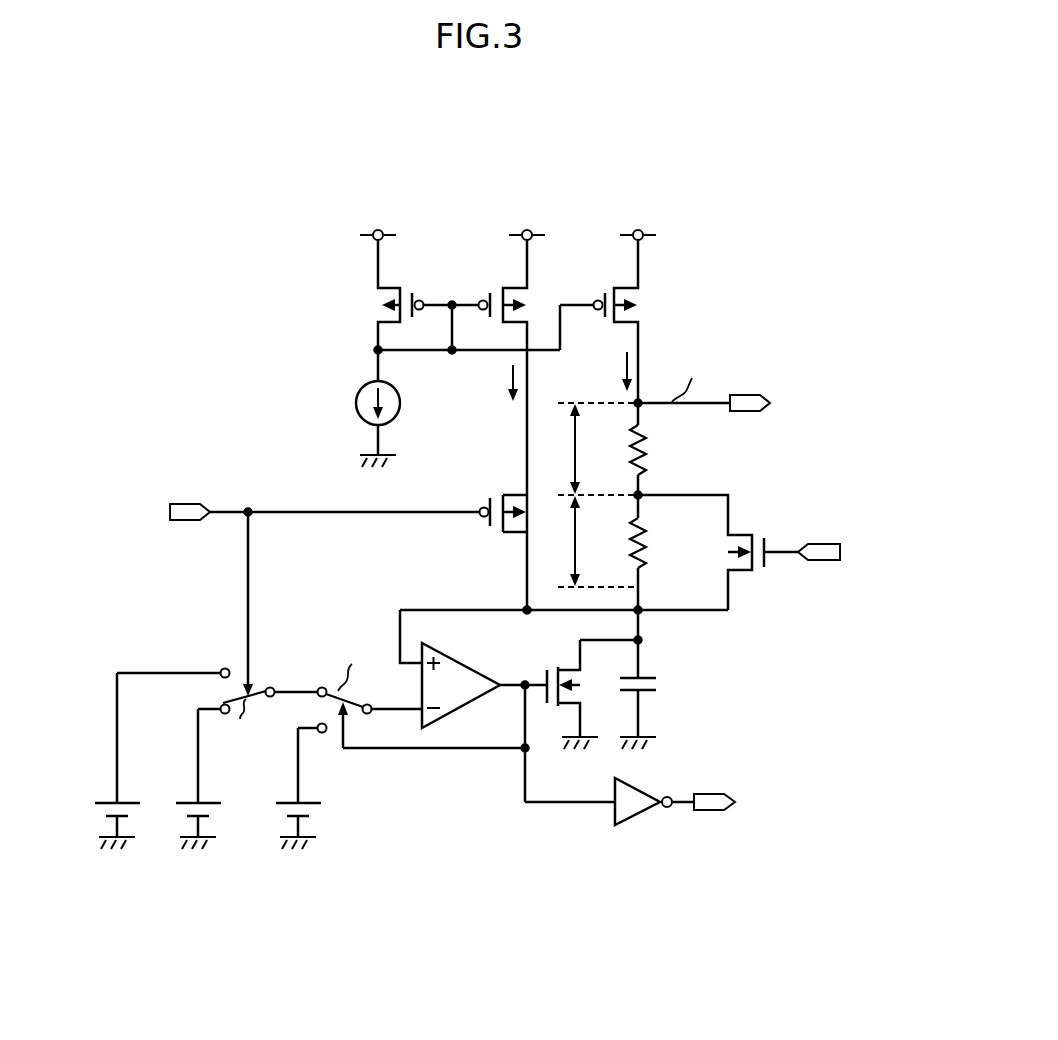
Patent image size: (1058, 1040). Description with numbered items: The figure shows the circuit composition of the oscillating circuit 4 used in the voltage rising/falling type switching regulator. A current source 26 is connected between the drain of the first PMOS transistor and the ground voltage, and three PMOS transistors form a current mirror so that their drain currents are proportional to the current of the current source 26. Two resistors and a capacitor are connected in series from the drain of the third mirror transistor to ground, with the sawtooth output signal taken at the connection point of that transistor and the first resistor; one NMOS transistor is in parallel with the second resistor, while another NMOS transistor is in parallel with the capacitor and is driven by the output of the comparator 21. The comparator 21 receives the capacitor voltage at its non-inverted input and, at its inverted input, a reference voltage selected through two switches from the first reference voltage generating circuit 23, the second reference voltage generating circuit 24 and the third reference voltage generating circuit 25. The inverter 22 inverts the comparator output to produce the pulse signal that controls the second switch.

The oscillating circuit 4 is at (726, 281).
The comparator 21 is at (458, 660).
The inverter 22 is at (640, 818).
The first reference voltage generating circuit 23 is at (177, 808).
The second reference voltage generating circuit 24 is at (96, 808).
The third reference voltage generating circuit 25 is at (277, 808).
The current source 26 is at (356, 403).